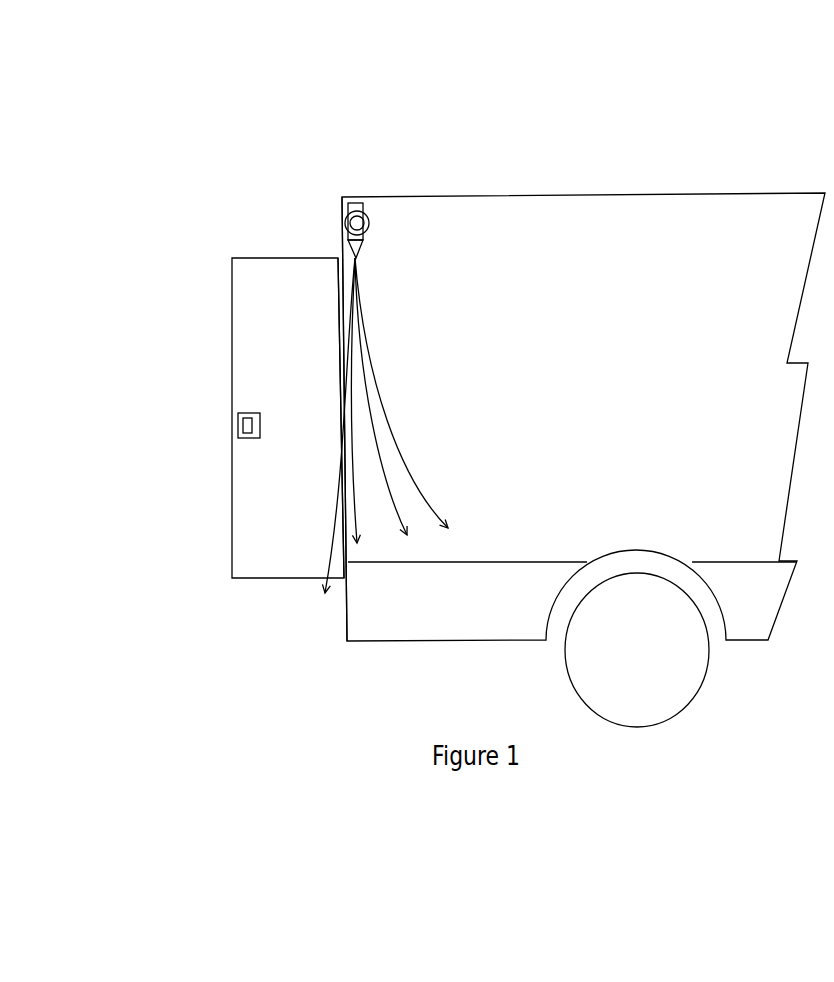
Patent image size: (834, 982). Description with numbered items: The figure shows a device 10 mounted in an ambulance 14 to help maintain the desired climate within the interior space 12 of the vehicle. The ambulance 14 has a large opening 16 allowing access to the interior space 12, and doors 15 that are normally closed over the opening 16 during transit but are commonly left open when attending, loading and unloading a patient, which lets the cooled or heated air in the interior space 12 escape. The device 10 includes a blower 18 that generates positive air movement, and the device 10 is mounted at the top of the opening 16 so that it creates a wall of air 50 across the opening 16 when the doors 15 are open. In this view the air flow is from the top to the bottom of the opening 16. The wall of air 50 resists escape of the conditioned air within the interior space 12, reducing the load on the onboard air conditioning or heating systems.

The device 10 is at (357, 205).
The interior space 12 is at (580, 308).
The ambulance 14 is at (548, 690).
The doors 15 is at (253, 585).
The opening 16 is at (339, 253).
The blower 18 is at (365, 217).
The wall of air 50 is at (388, 406).